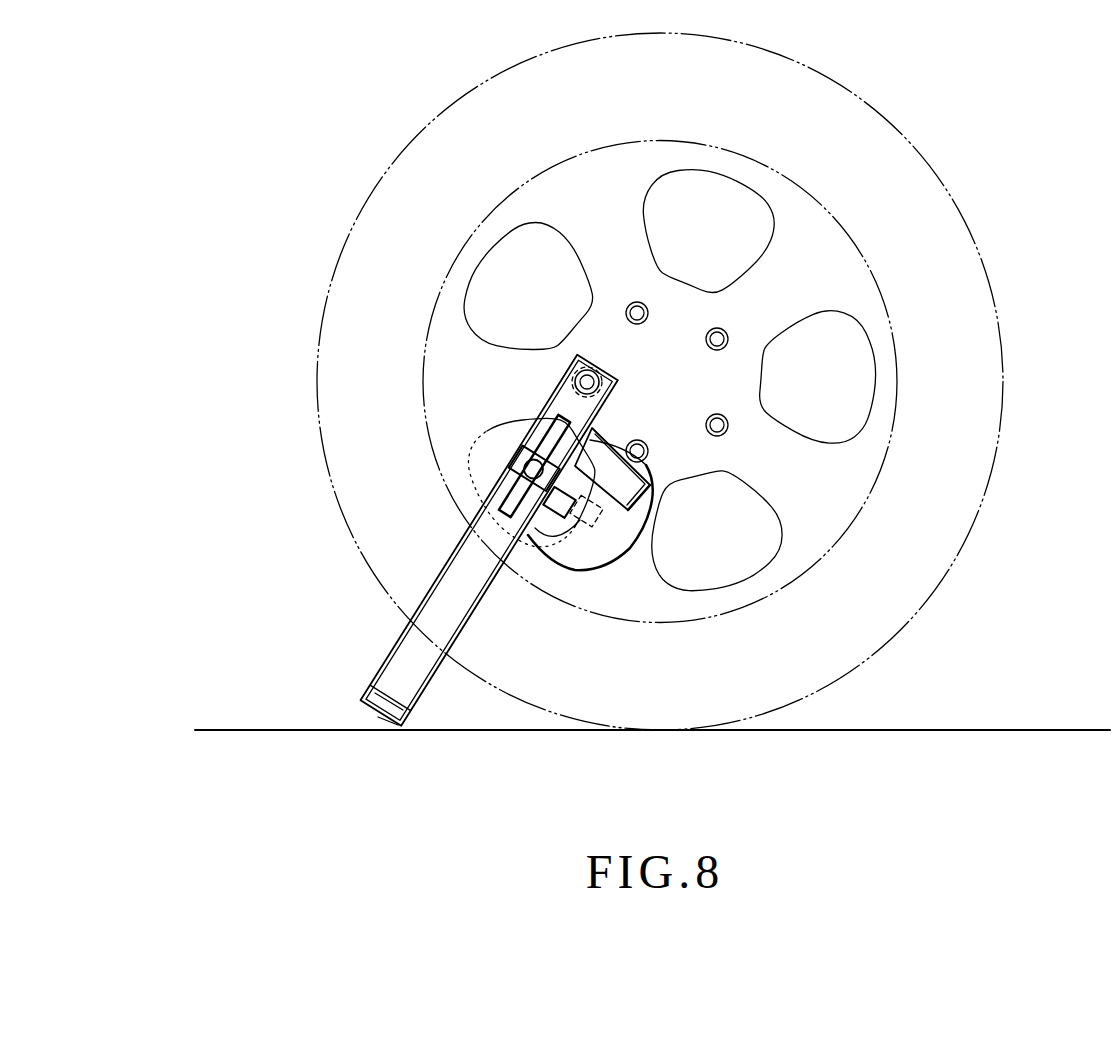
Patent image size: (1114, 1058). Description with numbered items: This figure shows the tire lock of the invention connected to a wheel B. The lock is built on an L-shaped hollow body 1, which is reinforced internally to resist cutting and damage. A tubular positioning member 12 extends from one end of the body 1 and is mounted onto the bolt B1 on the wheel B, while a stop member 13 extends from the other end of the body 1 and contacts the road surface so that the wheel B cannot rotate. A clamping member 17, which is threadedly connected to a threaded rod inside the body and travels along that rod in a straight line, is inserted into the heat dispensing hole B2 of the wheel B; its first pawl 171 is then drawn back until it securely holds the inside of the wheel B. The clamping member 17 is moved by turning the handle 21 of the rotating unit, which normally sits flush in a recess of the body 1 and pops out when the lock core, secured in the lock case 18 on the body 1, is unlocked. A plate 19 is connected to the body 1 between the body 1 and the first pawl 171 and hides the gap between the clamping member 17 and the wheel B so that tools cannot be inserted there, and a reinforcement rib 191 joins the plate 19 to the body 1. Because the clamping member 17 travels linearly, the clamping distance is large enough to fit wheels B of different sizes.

The wheel B is at (853, 283).
The bolt B1 is at (440, 260).
The heat dispensing hole B2 is at (480, 457).
The body 1 is at (462, 580).
The positioning member 12 is at (560, 378).
The stop member 13 is at (388, 697).
The handle 21 is at (548, 433).
The lock case 18 is at (548, 517).
The clamping member 17 is at (577, 533).
The first pawl 171 is at (597, 517).
The plate 19 is at (623, 530).
The reinforcement rib 191 is at (628, 488).